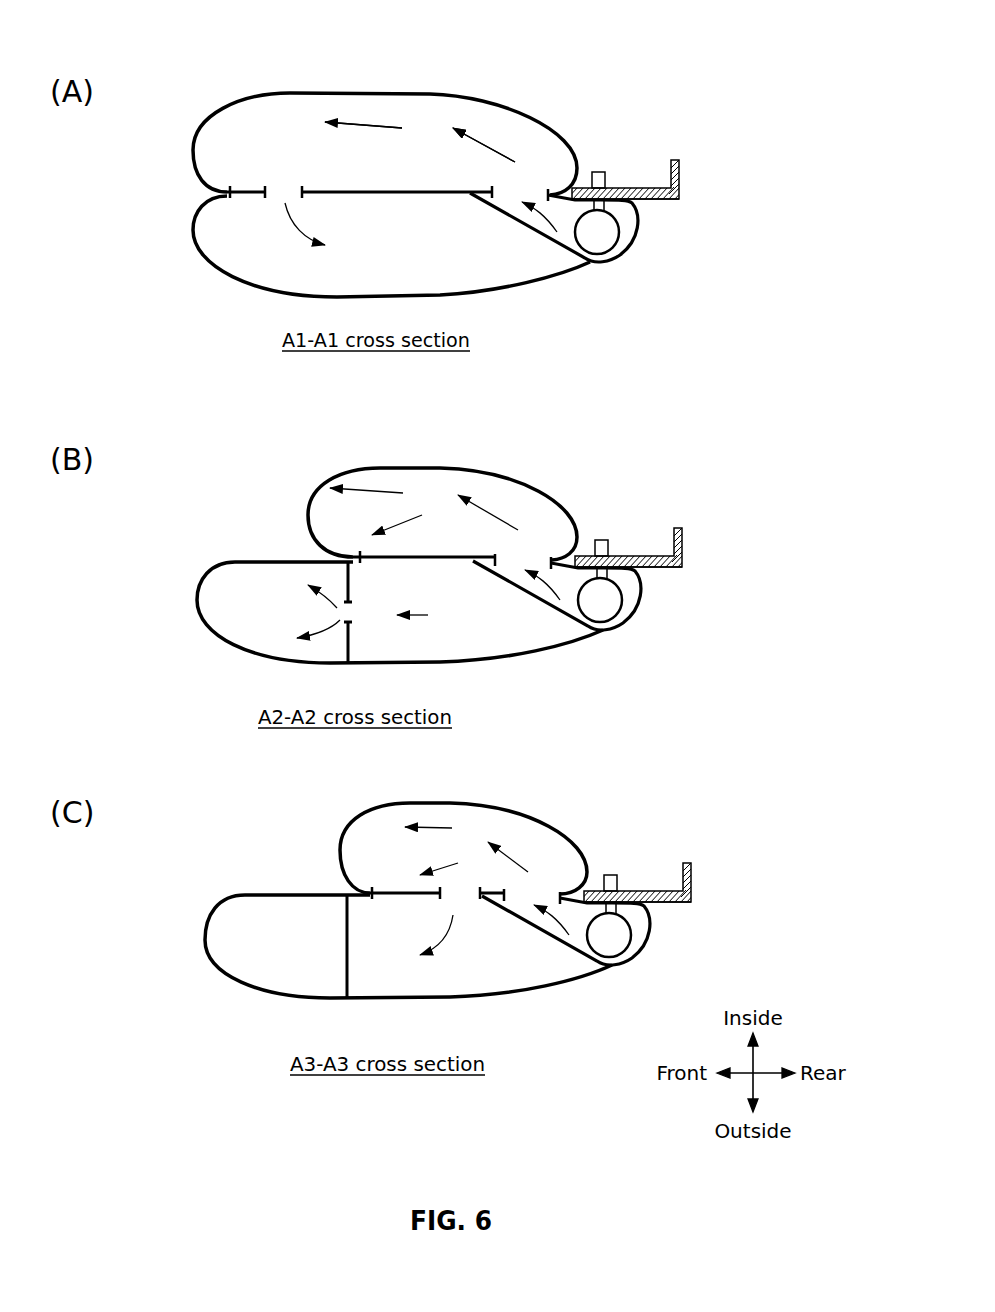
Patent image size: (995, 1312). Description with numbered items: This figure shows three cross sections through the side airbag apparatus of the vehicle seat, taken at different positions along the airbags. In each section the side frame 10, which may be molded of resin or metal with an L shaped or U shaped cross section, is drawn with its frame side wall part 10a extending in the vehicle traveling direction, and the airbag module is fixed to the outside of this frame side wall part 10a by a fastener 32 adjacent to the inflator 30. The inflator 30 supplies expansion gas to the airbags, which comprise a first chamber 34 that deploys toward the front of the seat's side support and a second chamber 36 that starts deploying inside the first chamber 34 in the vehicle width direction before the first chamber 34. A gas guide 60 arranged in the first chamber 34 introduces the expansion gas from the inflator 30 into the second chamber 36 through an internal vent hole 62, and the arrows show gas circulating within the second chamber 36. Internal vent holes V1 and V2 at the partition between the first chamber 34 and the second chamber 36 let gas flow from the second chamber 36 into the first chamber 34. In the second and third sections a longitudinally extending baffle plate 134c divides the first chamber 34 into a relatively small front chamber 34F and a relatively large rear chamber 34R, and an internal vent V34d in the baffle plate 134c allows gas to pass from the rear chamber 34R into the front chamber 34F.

The side frame 10 is at (682, 173).
The frame side wall part 10a is at (643, 189).
The inflator 30 is at (613, 237).
The bolt 32 is at (599, 172).
The first chamber 34 is at (197, 265).
The front chamber 34F is at (257, 601).
The rear chamber 34R is at (476, 591).
The second chamber 36 is at (343, 86).
The gas guide 60 is at (534, 230).
The internal vent hole 62 is at (524, 190).
The baffle plate 134c is at (347, 593).
The internal vent hole V1 is at (280, 183).
The internal vent hole V2 is at (462, 898).
The internal vent V34d is at (357, 617).